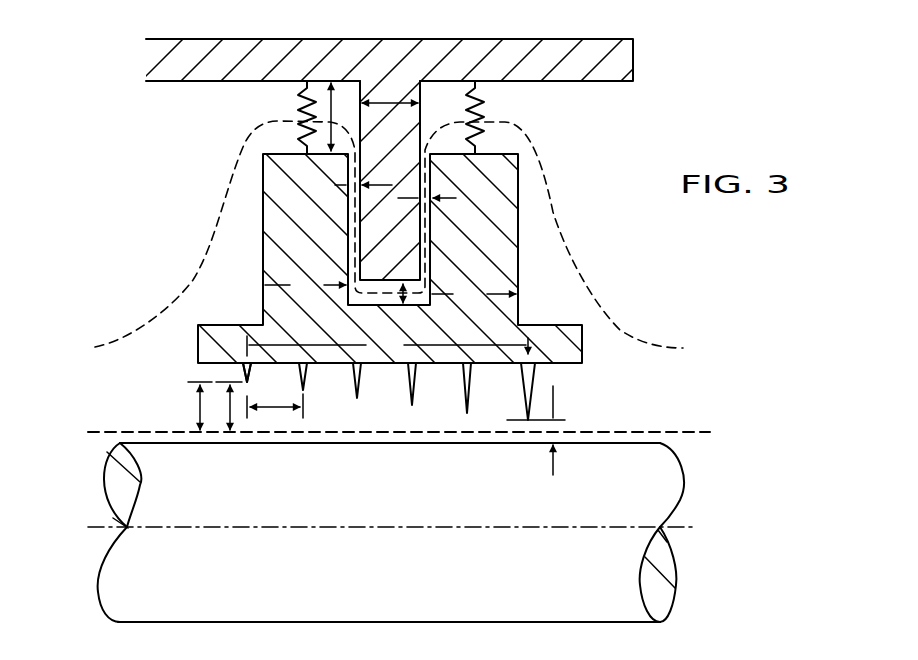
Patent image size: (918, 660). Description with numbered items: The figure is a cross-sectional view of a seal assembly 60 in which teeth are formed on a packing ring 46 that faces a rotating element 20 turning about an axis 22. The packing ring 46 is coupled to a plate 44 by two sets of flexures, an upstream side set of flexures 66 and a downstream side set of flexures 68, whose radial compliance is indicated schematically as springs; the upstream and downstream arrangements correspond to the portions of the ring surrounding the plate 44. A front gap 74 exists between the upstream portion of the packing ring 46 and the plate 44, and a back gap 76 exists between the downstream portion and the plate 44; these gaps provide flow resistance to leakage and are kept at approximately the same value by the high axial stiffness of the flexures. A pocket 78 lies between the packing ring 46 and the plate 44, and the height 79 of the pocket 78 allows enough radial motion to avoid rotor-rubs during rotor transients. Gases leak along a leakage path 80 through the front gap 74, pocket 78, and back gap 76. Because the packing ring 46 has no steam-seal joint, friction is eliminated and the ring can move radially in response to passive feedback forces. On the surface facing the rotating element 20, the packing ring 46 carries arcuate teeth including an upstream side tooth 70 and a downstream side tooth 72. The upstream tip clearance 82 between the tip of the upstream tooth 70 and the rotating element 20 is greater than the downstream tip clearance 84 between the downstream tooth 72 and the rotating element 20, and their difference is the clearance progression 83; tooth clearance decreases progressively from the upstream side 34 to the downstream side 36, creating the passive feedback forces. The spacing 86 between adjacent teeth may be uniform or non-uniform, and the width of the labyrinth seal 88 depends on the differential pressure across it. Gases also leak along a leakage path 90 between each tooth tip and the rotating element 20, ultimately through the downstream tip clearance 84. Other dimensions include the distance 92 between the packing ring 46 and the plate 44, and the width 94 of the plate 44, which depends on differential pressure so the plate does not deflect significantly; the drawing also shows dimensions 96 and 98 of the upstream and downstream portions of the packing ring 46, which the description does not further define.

The rotating element 20 is at (113, 580).
The axis 22 is at (682, 527).
The upstream side 34 is at (147, 259).
The downstream side 36 is at (621, 258).
The plate 44 is at (399, 80).
The packing ring 46 is at (498, 212).
The seal assembly 60 is at (686, 96).
The upstream side set of flexures 66 is at (303, 95).
The downstream side set of flexures 68 is at (484, 97).
The upstream side tooth 70 is at (245, 367).
The downstream side tooth 72 is at (533, 377).
The front gap 74 is at (336, 187).
The back gap 76 is at (456, 199).
The pocket 78 is at (384, 298).
The height of the pocket 79 is at (411, 304).
The leakage path 80 is at (668, 347).
The upstream tip clearance 82 is at (228, 410).
The clearance progression 83 is at (197, 399).
The downstream tip clearance 84 is at (555, 396).
The spacing 86 is at (276, 412).
The width of the labyrinth seal 88 is at (387, 346).
The leakage path 90 is at (680, 432).
The distance 92 is at (330, 128).
The width 94 is at (390, 100).
The first wall thickness 96 is at (305, 285).
The second wall thickness 98 is at (474, 294).